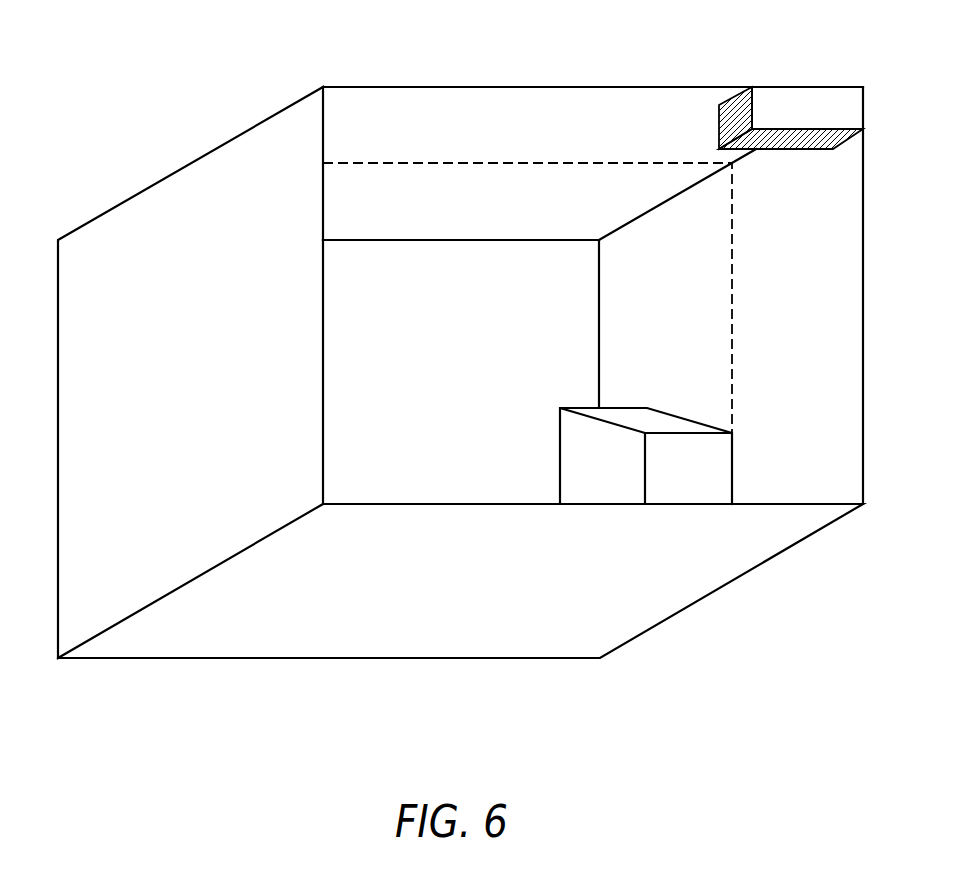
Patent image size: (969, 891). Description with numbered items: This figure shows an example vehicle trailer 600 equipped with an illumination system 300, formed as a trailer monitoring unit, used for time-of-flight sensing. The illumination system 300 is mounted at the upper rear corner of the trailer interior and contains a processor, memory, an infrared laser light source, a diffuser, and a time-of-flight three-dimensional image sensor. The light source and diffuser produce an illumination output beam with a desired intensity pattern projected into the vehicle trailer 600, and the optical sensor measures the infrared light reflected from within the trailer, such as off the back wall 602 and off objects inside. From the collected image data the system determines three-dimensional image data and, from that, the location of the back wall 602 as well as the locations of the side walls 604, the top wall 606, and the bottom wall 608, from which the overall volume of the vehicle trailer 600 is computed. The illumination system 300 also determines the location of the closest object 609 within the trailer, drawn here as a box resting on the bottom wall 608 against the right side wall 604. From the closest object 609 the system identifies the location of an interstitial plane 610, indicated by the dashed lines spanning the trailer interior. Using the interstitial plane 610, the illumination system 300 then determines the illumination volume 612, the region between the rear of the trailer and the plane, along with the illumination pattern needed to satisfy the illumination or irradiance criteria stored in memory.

The vehicle trailer 600 is at (367, 86).
The illumination system 300 is at (813, 86).
The back wall 602 is at (482, 384).
The side walls 604 is at (212, 384).
The top wall 606 is at (507, 136).
The bottom wall 608 is at (482, 594).
The closest object 609 is at (710, 467).
The interstitial plane 610 is at (734, 324).
The illumination volume 612 is at (342, 208).